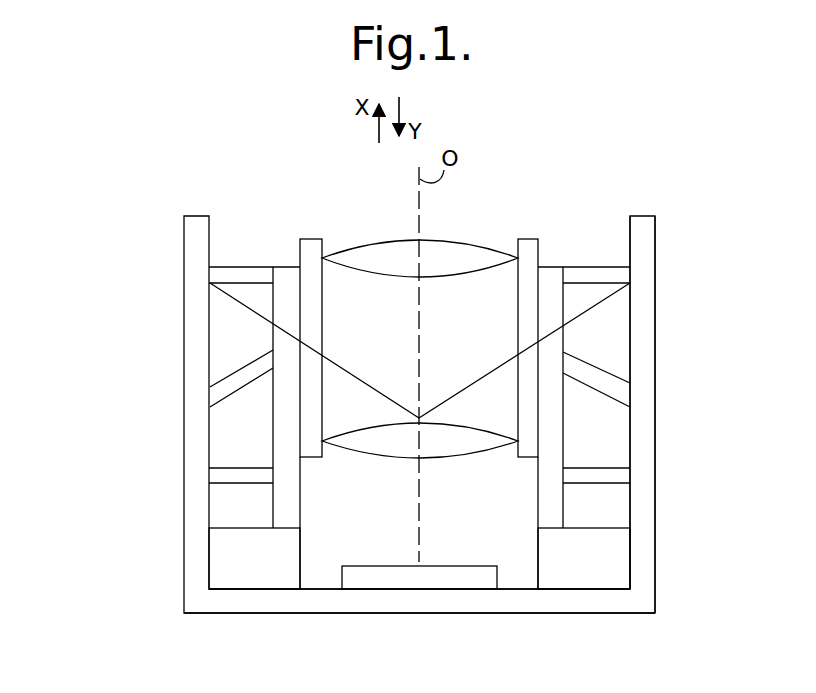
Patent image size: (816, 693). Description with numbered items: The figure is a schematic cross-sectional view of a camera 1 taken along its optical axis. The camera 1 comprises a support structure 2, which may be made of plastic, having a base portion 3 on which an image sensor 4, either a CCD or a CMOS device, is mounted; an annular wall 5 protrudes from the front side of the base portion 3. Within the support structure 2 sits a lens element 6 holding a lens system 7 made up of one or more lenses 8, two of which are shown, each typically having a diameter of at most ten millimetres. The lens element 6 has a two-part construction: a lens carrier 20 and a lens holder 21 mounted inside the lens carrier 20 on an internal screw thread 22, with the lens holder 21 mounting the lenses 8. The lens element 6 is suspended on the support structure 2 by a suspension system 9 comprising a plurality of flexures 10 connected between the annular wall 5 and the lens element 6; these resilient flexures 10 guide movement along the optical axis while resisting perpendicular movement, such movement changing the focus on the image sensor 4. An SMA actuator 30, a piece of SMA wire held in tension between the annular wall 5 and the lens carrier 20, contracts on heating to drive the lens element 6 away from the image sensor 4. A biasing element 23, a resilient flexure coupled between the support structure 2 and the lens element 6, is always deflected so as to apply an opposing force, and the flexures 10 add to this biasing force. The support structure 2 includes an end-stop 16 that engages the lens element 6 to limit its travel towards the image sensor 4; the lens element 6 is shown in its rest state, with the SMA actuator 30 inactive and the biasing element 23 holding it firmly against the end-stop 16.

The camera 1 is at (165, 273).
The support structure 2 is at (648, 478).
The base portion 3 is at (393, 602).
The image sensor 4 is at (450, 580).
The annular wall 5 is at (657, 433).
The lens element 6 is at (302, 232).
The lens system 7 is at (351, 232).
The lens 8 is at (394, 255).
The suspension system 9 is at (230, 255).
The flexure 10 is at (222, 278).
The end-stop 16 is at (243, 565).
The lens carrier 20 is at (553, 272).
The lens holder 21 is at (528, 252).
The internal screw thread 22 is at (537, 320).
The biasing element 23 is at (238, 380).
The SMA actuator 30 is at (597, 305).